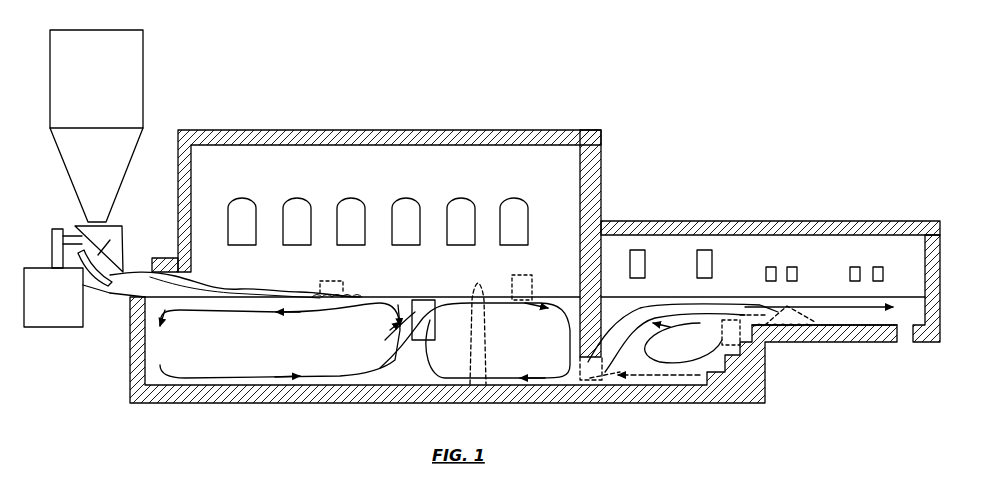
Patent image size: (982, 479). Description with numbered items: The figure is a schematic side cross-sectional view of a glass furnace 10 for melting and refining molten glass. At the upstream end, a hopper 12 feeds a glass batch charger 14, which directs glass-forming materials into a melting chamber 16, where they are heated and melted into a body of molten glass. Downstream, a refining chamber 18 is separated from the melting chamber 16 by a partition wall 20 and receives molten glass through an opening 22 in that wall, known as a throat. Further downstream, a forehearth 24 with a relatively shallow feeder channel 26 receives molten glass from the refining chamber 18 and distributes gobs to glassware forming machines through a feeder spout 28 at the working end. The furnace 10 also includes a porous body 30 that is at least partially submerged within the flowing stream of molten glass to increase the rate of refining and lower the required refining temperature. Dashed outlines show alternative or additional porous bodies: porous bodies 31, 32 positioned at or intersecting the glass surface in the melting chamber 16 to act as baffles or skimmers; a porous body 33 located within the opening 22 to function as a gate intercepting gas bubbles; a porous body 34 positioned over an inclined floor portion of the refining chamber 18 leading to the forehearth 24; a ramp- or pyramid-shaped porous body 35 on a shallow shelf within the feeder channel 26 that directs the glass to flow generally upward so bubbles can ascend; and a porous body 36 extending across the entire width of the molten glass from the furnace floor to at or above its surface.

The glass furnace 10 is at (692, 104).
The hopper 12 is at (143, 46).
The glass batch charger 14 is at (117, 250).
The melting chamber 16 is at (376, 201).
The refining chamber 18 is at (770, 249).
The partition wall 20 is at (580, 255).
The opening 22 is at (584, 384).
The forehearth 24 is at (824, 273).
The feeder channel 26 is at (850, 314).
The feeder spout 28 is at (907, 333).
The porous body 30 is at (427, 302).
The porous body 31 is at (333, 281).
The porous body 32 is at (513, 277).
The porous body 33 is at (598, 373).
The porous body 34 is at (722, 342).
The porous body 35 is at (777, 317).
The porous body 36 is at (487, 333).